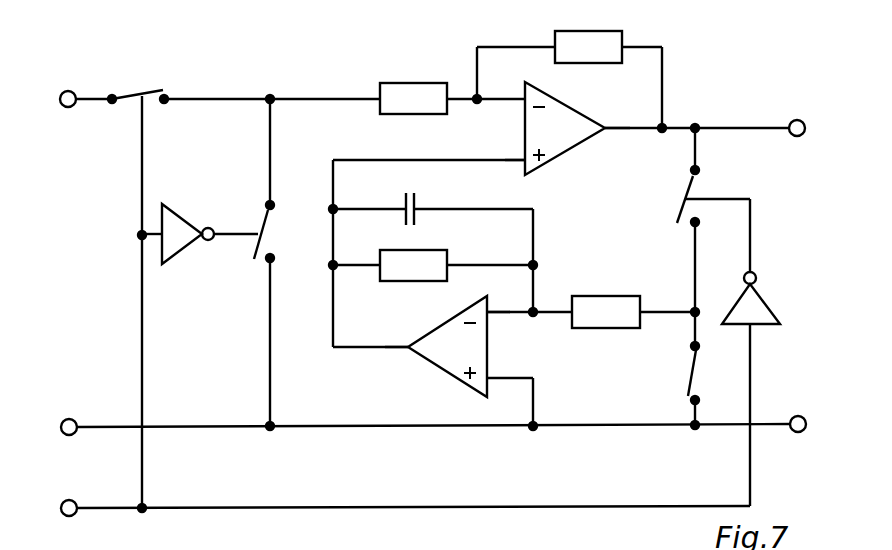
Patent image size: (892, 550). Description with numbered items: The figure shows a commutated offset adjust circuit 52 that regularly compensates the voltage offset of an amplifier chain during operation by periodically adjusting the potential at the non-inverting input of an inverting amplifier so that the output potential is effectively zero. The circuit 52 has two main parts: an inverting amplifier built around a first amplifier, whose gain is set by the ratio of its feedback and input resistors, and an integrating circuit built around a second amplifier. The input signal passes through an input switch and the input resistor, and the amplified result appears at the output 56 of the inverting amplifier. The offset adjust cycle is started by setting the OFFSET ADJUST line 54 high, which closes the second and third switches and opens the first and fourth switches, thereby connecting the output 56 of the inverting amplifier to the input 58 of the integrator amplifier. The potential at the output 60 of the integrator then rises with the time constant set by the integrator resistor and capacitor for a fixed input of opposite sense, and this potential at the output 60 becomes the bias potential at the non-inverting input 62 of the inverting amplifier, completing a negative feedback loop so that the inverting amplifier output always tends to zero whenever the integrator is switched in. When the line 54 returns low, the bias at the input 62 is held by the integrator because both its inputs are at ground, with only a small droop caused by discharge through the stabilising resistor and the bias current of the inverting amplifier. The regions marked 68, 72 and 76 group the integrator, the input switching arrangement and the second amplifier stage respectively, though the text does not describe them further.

The commutated offset adjust circuit 52 is at (97, 194).
The OFFSET ADJUST line 54 is at (381, 494).
The output of the inverting amplifier A1 56 is at (607, 125).
The input of the integrator amplifier A2 58 is at (492, 316).
The output of the integrator 60 is at (406, 352).
The non-inverting input of amplifier A1 62 is at (522, 157).
The integrator section 68 is at (385, 538).
The input switching section 72 is at (223, 324).
The amplifier A2 section 76 is at (551, 410).